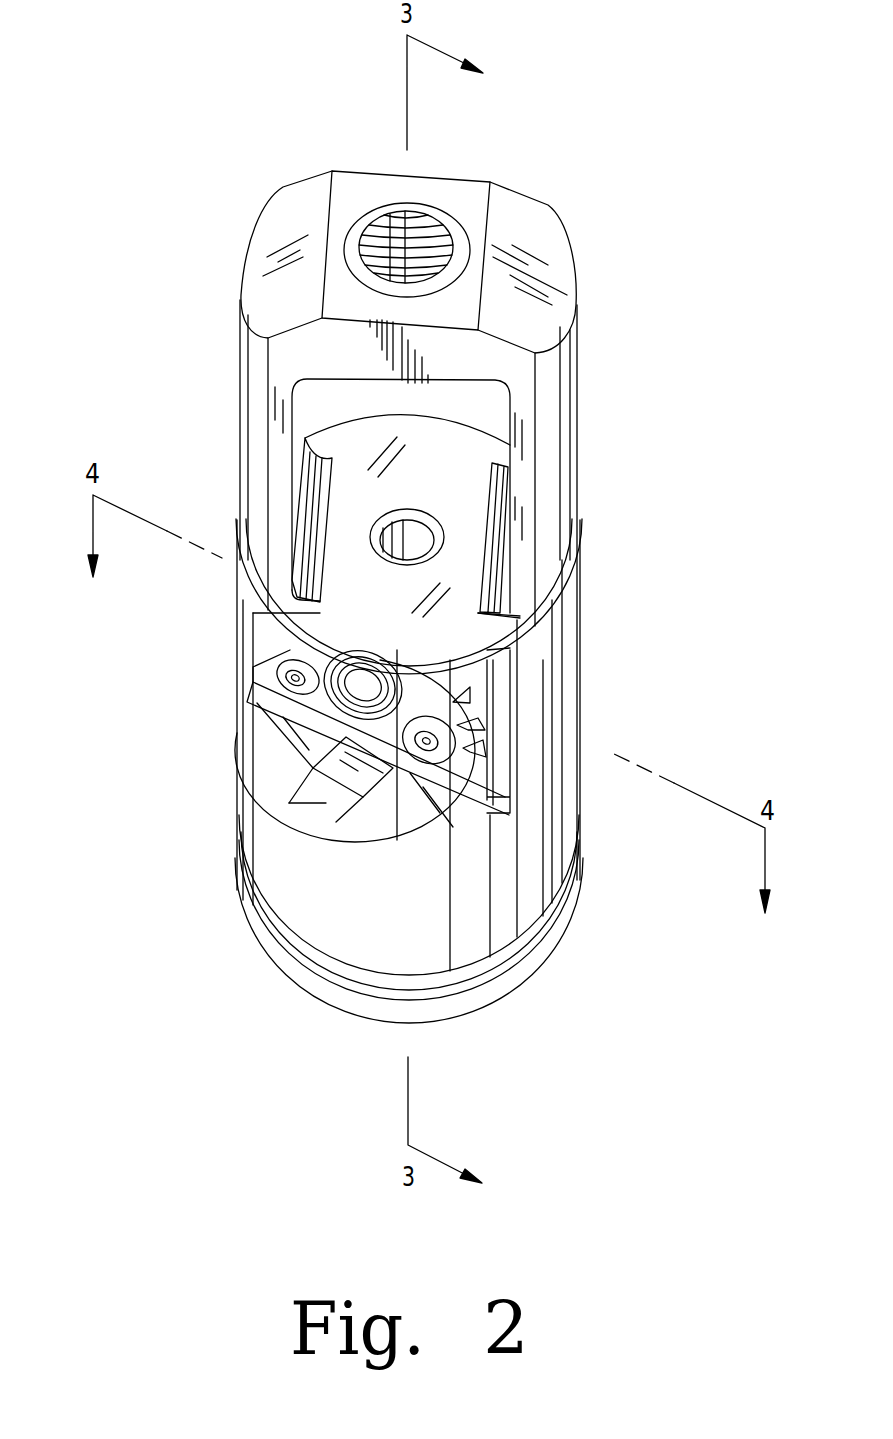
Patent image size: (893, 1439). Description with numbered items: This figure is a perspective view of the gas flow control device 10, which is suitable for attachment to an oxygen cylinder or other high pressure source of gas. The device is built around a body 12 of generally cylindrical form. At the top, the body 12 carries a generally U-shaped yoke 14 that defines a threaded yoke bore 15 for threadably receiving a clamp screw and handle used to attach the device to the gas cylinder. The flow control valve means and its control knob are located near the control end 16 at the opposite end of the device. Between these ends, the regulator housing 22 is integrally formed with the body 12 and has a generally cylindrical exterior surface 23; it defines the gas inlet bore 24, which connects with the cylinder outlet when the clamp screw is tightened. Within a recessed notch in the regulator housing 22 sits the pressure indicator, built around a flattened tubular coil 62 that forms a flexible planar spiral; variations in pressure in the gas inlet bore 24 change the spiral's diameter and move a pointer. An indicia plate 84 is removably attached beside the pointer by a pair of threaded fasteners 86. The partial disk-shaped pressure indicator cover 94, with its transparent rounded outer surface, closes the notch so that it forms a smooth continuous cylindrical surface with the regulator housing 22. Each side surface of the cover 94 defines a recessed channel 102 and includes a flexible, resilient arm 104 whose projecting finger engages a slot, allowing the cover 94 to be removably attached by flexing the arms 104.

The gas flow control device 10 is at (133, 330).
The body 12 is at (582, 612).
The yoke 14 is at (548, 440).
The threaded yoke bore 15 is at (428, 237).
The control end 16 is at (303, 984).
The regulator housing 22 is at (560, 668).
The exterior surface 23 is at (545, 748).
The gas inlet bore 24 is at (416, 540).
The flattened tubular coil 62 is at (262, 700).
The indicia plate 84 is at (262, 662).
The threaded fasteners 86 is at (427, 692).
The pressure indicator cover 94 is at (262, 728).
The recessed channel 102 is at (323, 803).
The arm 104 is at (300, 762).